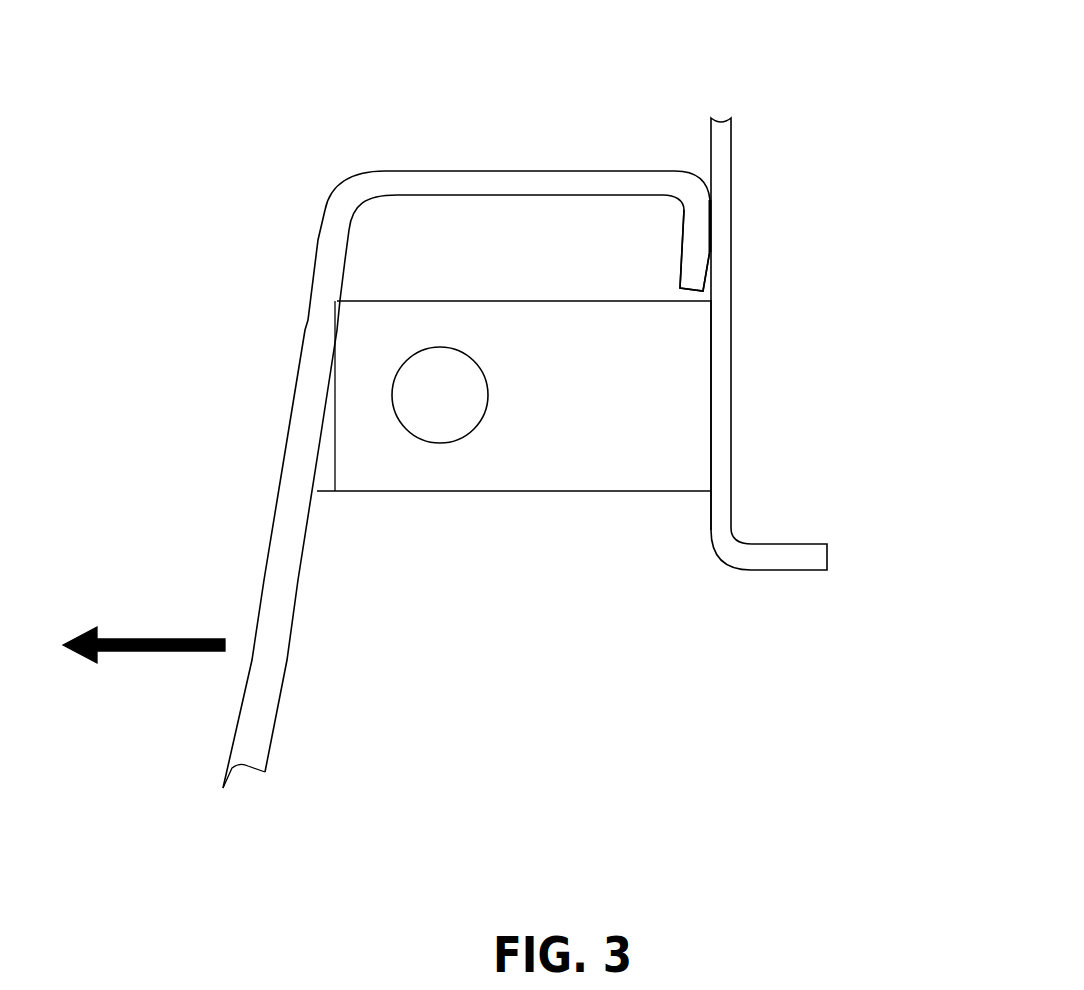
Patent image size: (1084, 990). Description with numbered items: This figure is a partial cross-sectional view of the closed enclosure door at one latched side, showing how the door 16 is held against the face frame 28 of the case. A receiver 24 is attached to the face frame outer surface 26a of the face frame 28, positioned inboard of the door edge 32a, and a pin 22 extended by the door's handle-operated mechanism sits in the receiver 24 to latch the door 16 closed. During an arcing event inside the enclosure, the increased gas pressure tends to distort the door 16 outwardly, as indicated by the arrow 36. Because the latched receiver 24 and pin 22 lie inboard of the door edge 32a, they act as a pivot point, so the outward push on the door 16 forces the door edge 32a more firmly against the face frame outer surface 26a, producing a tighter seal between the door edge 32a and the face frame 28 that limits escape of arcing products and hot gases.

The door 16 is at (333, 307).
The pin 22 is at (441, 388).
The receiver 24 is at (556, 424).
The face frame outer surface 26a is at (710, 162).
The face frame 28 is at (718, 355).
The door edge 32a is at (692, 268).
The arrow 36 is at (165, 640).